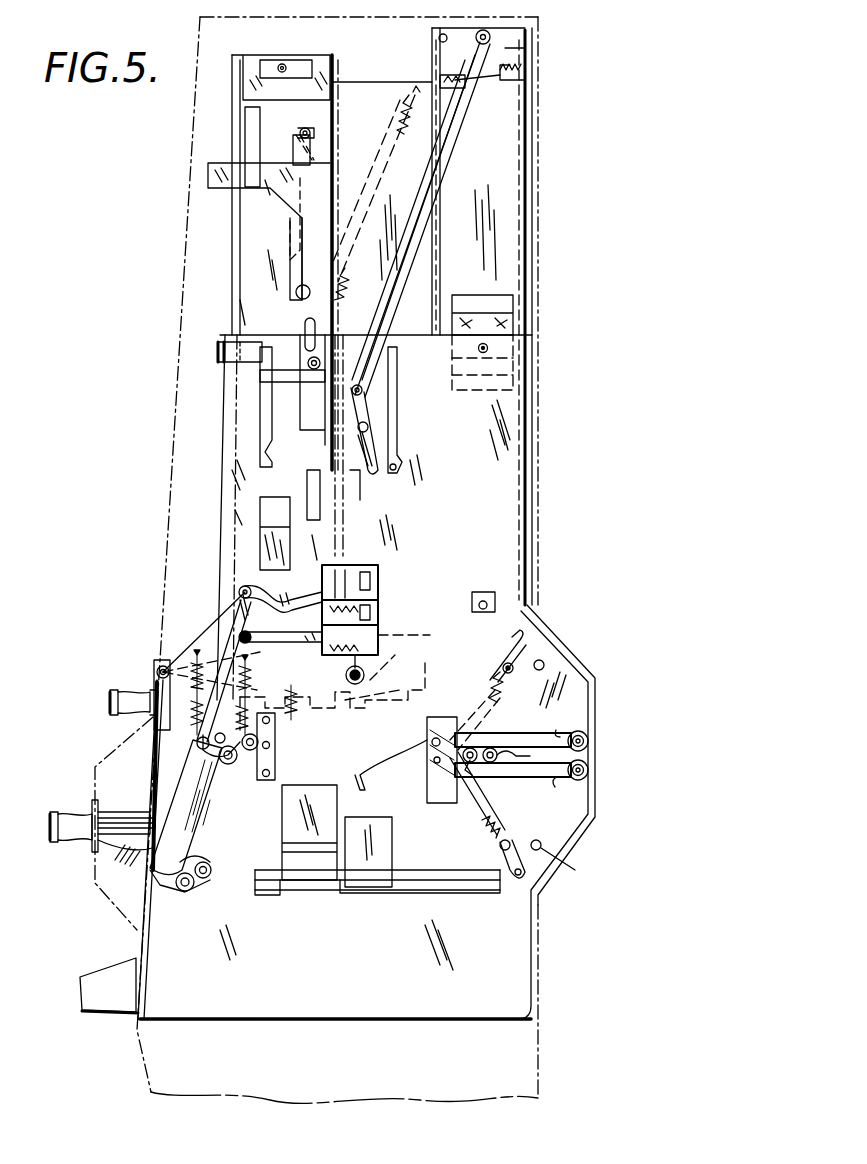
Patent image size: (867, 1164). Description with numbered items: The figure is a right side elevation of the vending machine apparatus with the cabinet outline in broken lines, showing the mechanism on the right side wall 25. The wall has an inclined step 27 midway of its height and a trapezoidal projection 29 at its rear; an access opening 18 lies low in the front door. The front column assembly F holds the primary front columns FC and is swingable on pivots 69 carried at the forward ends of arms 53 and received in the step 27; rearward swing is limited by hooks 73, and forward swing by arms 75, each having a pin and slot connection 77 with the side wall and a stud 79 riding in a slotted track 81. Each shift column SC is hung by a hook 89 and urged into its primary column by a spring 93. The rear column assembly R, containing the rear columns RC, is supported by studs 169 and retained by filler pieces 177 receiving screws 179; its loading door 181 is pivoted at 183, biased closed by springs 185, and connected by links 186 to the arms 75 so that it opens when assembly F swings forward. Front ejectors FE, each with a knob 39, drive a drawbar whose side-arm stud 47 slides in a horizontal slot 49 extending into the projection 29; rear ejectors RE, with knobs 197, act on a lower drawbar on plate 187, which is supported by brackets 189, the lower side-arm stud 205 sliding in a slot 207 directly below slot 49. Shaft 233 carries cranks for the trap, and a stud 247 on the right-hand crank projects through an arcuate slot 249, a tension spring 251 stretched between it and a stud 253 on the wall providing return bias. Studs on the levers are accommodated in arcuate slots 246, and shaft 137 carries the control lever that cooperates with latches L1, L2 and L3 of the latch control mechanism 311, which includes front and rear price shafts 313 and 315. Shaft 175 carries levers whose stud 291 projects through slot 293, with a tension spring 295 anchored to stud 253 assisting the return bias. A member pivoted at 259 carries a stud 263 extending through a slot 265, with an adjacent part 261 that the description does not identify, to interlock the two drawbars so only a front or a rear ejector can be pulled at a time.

The access opening 18 is at (100, 958).
The right side wall 25 is at (510, 435).
The inclined step 27 is at (185, 645).
The trapezoidal projection 29 is at (578, 702).
The knob 39 is at (112, 708).
The stud 47 is at (588, 741).
The horizontal slot 49 is at (560, 734).
The arms 53 is at (330, 708).
The pivots 69 is at (152, 665).
The hooks 73 is at (220, 352).
The arms 75 is at (312, 153).
The pin and slot connection 77 is at (368, 428).
The stud 79 is at (310, 133).
The slotted track 81 is at (292, 256).
The hook 89 is at (336, 66).
The springs 93 is at (400, 107).
The shaft 137 is at (360, 683).
The studs 169 is at (483, 592).
The horizontal shaft 175 is at (544, 663).
The filler pieces 177 is at (513, 322).
The screws 179 is at (488, 348).
The door 181 is at (432, 54).
The pivot 183 is at (438, 36).
The springs 185 is at (518, 80).
The links 186 is at (420, 215).
The horizontal plate 187 is at (128, 820).
The brackets 189 is at (128, 866).
The knob 197 is at (60, 840).
The stud 205 is at (588, 770).
The horizontal slot 207 is at (556, 785).
The horizontal shaft 233 is at (574, 865).
The arcuate slots 246 is at (366, 800).
The stud 247 is at (512, 838).
The arcuate slot 249 is at (518, 880).
The tension spring 251 is at (480, 830).
The stud 253 is at (365, 782).
The pivot 259 is at (522, 756).
The pivot 261 is at (480, 748).
The stud 263 is at (472, 770).
The slot 265 is at (488, 742).
The stud 291 is at (503, 666).
The slot 293 is at (512, 636).
The tension spring 295 is at (492, 680).
The latch control mechanism 311 is at (242, 632).
The front price shaft 313 is at (232, 764).
The rear price shaft 315 is at (258, 745).
The front column assembly F is at (228, 108).
The front columns FC is at (232, 218).
The ejectors FE is at (110, 684).
The rear column assembly R is at (527, 103).
The rear columns RC is at (510, 158).
The ejectors RE is at (52, 806).
The shift column SC is at (370, 86).
The latch L1 is at (368, 650).
The latch L2 is at (372, 612).
The latch L3 is at (372, 590).